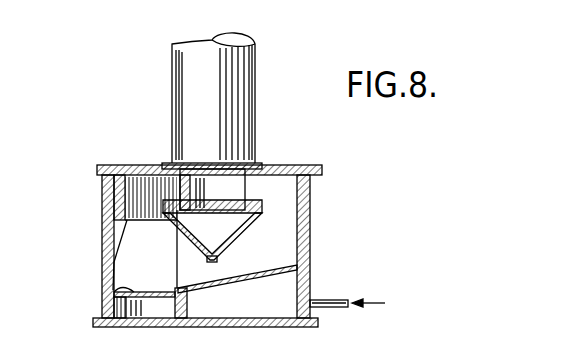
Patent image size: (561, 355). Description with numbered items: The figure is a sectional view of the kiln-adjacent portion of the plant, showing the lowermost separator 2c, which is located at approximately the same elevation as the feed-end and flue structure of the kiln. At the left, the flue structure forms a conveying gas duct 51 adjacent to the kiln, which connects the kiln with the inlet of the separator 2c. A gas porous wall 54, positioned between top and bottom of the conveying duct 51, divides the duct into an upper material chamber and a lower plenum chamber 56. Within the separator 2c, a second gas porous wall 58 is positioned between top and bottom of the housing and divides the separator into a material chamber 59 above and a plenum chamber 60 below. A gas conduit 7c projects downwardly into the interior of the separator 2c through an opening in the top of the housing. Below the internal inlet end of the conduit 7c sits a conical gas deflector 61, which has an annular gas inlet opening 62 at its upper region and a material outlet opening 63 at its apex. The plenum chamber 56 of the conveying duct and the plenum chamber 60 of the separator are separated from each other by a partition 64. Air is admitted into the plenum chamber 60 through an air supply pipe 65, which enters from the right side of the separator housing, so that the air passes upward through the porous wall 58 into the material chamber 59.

The lowermost separator 2c is at (96, 197).
The gas conduit 7c is at (171, 126).
The conveying gas duct 51 is at (114, 262).
The gas porous wall 54 is at (136, 292).
The plenum chamber 56 is at (145, 316).
The gas porous wall 58 is at (277, 277).
The material chamber 59 is at (300, 256).
The plenum chamber 60 is at (268, 306).
The conical gas deflector 61 is at (233, 231).
The annular gas inlet opening 62 is at (252, 208).
The material outlet opening 63 is at (210, 257).
The partition 64 is at (182, 318).
The air supply pipe 65 is at (332, 309).